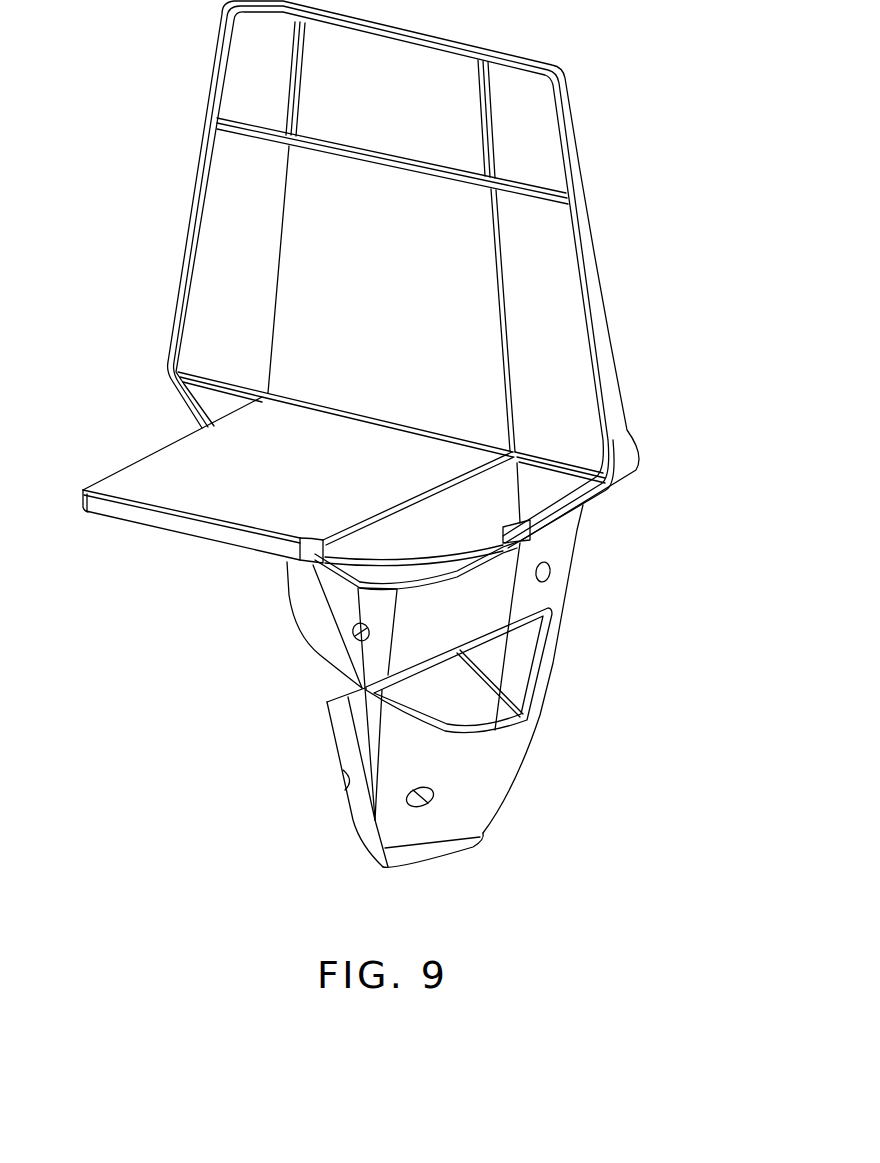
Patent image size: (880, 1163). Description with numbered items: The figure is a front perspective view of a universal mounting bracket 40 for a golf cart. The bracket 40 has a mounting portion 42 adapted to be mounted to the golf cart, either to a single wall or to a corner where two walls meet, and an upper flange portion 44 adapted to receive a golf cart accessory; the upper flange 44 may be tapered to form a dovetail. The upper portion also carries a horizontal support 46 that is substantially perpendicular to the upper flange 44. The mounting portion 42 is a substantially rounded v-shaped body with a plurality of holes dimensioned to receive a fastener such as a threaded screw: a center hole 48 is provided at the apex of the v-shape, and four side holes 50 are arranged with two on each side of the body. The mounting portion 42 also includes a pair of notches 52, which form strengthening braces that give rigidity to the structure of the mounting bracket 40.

The universal mounting bracket 40 is at (411, 434).
The mounting portion 42 is at (430, 665).
The upper flange portion 44 is at (227, 189).
The horizontal support 46 is at (182, 493).
The center hole 48 is at (353, 636).
The side holes 50 is at (551, 572).
The notches 52 is at (467, 700).